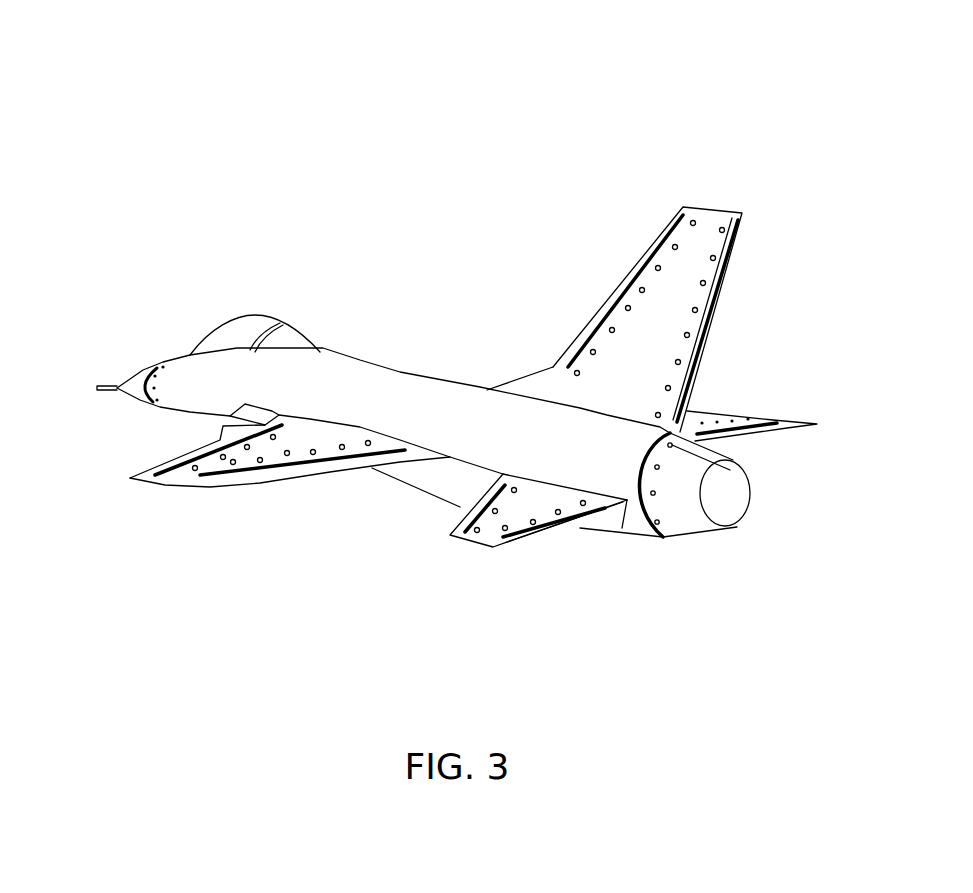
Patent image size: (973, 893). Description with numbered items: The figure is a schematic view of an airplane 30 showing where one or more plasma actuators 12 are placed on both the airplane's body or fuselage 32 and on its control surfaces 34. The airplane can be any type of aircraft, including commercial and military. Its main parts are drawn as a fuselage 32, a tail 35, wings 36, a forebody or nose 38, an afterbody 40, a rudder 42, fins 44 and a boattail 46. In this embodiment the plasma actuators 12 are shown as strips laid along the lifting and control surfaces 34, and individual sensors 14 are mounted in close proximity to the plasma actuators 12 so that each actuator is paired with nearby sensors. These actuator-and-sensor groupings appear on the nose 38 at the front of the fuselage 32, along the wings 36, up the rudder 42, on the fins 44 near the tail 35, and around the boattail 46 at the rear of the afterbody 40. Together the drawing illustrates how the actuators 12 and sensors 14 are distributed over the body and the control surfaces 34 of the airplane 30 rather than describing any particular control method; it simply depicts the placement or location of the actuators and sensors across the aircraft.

The plasma actuator 12 is at (237, 477).
The individual sensor 14 is at (147, 397).
The airplane 30 is at (495, 355).
The fuselage 32 is at (383, 402).
The control surfaces 34 is at (537, 435).
The tail 35 is at (682, 528).
The wings 36 is at (175, 480).
The forebody (nose) 38 is at (183, 363).
The afterbody 40 is at (514, 547).
The rudder 42 is at (677, 283).
The fins 44 is at (517, 510).
The boattail 46 is at (697, 523).